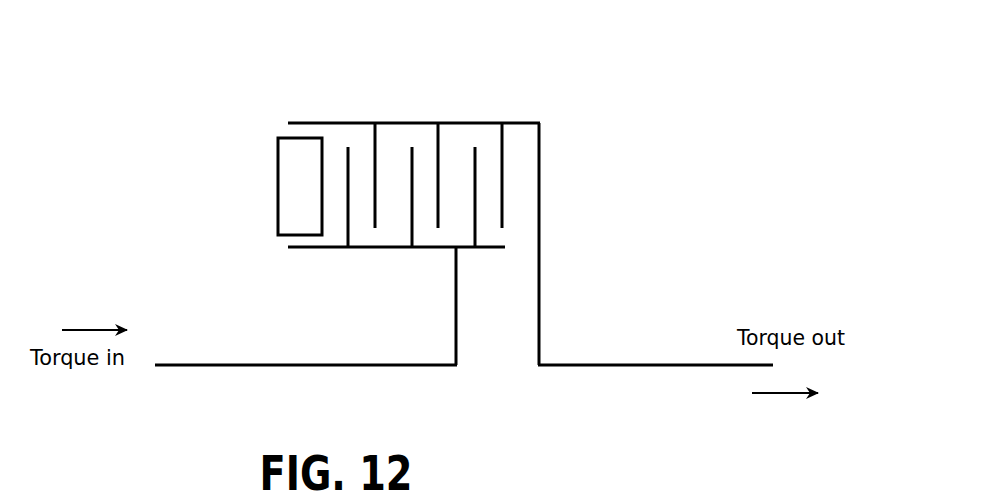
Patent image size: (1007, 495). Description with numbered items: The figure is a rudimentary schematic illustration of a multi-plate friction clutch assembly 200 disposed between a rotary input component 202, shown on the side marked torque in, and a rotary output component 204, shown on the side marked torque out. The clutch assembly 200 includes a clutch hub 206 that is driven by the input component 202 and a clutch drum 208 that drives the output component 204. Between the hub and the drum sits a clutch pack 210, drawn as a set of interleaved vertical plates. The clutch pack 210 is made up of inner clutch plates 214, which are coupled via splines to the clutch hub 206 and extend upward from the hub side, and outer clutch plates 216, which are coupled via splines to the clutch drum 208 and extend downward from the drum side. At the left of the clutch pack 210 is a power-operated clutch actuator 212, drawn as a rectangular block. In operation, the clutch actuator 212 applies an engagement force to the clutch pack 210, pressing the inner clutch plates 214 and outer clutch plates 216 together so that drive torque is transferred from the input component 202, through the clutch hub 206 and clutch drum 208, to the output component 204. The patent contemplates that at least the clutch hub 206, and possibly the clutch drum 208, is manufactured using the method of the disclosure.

The multi-plate friction clutch assembly 200 is at (616, 98).
The rotary input component 202 is at (217, 365).
The rotary output component 204 is at (645, 365).
The clutch hub 206 is at (455, 282).
The clutch drum 208 is at (540, 183).
The clutch pack 210 is at (457, 136).
The power-operated clutch actuator 212 is at (293, 180).
The inner clutch plates 214 is at (346, 155).
The outer clutch plates 216 is at (377, 133).